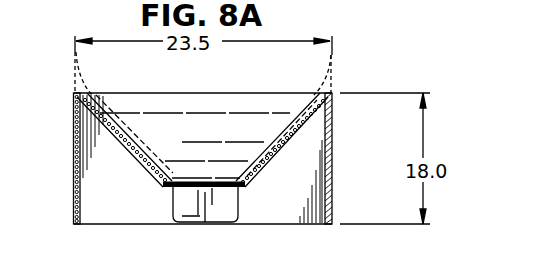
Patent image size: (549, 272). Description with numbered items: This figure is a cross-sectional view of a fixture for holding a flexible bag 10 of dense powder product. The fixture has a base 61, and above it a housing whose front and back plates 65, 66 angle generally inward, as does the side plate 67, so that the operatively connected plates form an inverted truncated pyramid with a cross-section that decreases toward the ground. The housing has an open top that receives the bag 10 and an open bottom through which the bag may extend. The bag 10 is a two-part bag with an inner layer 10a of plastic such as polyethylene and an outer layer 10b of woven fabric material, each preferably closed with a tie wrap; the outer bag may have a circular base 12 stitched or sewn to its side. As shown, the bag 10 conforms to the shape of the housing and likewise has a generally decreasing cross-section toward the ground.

The flexible bag 10 is at (206, 135).
The inner layer 10a is at (322, 72).
The outer layer 10b is at (333, 77).
The base 12 is at (184, 222).
The base 61 is at (298, 168).
The front plate 65 is at (74, 181).
The back plate 66 is at (329, 190).
The side plate 67 is at (206, 92).